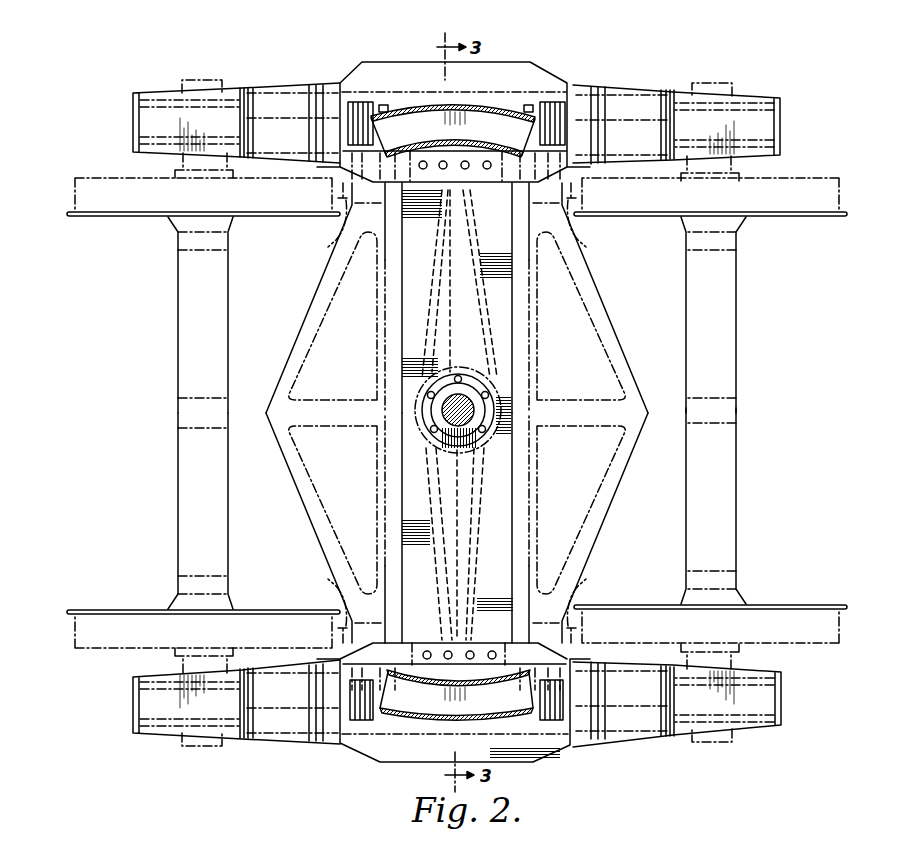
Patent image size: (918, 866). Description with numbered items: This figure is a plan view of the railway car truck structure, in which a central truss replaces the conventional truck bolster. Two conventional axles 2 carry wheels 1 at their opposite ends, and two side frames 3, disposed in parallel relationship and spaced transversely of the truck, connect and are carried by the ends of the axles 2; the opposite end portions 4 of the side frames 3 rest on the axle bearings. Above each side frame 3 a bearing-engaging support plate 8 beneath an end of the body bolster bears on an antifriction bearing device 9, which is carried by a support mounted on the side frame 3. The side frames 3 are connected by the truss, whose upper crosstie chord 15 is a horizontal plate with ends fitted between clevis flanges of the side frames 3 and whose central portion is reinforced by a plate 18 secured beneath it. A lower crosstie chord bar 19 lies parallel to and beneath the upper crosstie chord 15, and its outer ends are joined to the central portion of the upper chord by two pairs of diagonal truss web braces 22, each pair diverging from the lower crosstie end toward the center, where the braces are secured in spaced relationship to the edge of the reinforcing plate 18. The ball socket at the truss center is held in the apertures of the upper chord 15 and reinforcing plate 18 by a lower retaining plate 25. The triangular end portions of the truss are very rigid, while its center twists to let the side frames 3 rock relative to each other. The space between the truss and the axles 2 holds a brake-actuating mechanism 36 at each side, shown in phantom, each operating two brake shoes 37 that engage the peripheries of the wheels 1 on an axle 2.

The wheels 1 is at (106, 216).
The axles 2 is at (178, 331).
The side frames 3 is at (271, 84).
The end portions 4 is at (172, 104).
The bearing-engaging support plates 8 is at (499, 124).
The antifriction bearing device 9 is at (418, 102).
The upper crosstie chord 15 is at (503, 512).
The central reinforcing plate 18 is at (410, 437).
The lower crosstie chord bar 19 is at (462, 536).
The diagonal truss web braces 22 is at (423, 322).
The lower retaining plate 25 is at (478, 408).
The brake-actuating mechanism 36 is at (307, 500).
The brake shoes 37 is at (330, 240).